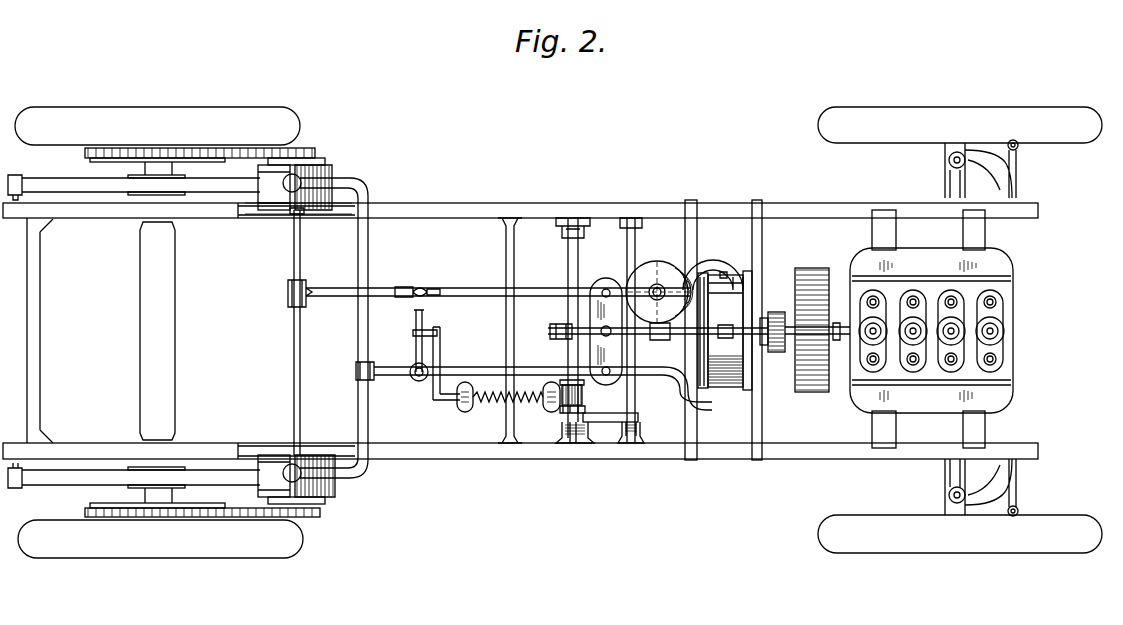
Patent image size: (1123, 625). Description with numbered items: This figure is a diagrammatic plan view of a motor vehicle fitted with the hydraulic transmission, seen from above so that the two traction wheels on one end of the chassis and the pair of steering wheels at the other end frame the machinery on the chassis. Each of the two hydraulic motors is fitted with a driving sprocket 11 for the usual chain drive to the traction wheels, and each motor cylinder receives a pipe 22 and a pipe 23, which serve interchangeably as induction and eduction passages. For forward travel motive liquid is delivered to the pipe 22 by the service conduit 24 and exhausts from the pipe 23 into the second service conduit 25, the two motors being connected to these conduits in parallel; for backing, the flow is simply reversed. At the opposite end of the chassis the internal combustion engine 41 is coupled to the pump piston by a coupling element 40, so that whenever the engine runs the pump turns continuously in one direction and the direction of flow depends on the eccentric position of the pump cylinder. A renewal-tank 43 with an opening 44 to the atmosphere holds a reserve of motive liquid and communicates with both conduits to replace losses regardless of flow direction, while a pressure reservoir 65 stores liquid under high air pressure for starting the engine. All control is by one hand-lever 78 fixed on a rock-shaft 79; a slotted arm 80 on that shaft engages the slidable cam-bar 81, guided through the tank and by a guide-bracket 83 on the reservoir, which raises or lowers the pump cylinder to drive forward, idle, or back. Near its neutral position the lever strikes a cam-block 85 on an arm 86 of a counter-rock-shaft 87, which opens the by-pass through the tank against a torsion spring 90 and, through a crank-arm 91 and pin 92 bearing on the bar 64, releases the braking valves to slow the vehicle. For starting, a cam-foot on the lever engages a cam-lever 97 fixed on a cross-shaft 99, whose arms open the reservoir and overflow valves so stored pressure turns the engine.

The driving sprocket 11 is at (296, 158).
The pipe 22 is at (294, 243).
The pipe 23 is at (338, 182).
The service conduit 24 is at (330, 283).
The second service conduit 25 is at (478, 363).
The coupling element 40 is at (776, 312).
The internal combustion engine 41 is at (1013, 288).
The renewal-tank 43 is at (590, 313).
The opening 44 is at (580, 332).
The bar 64 is at (410, 362).
The pressure reservoir 65 is at (650, 262).
The hand-lever 78 is at (574, 443).
The rock-shaft 79 is at (568, 263).
The slotted arm 80 is at (552, 331).
The cam-bar 81 is at (700, 340).
The guide-bracket 83 is at (660, 340).
The cam-block 85 is at (562, 412).
The arm 86 is at (584, 402).
The counter-rock-shaft 87 is at (470, 407).
The torsion spring 90 is at (500, 396).
The crank-arm 91 is at (440, 345).
The pin 92 is at (416, 332).
The cam-lever 97 is at (607, 422).
The cross-shaft 99 is at (627, 243).